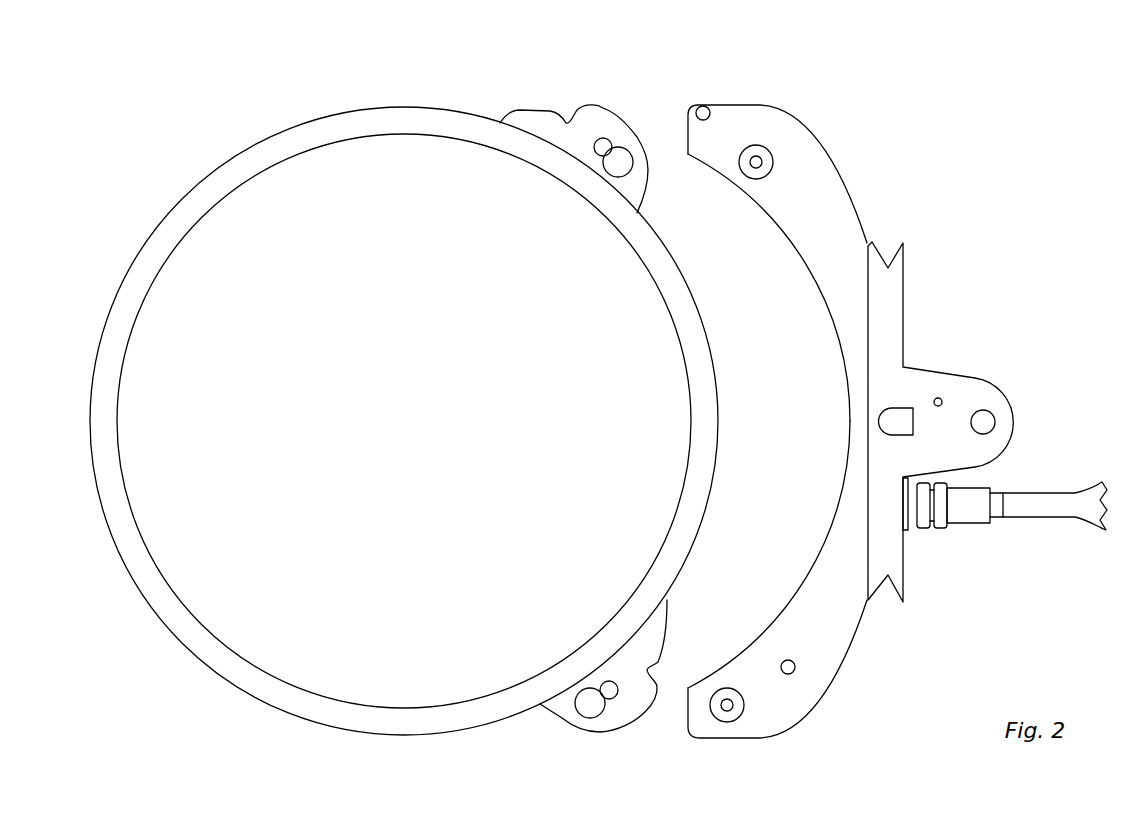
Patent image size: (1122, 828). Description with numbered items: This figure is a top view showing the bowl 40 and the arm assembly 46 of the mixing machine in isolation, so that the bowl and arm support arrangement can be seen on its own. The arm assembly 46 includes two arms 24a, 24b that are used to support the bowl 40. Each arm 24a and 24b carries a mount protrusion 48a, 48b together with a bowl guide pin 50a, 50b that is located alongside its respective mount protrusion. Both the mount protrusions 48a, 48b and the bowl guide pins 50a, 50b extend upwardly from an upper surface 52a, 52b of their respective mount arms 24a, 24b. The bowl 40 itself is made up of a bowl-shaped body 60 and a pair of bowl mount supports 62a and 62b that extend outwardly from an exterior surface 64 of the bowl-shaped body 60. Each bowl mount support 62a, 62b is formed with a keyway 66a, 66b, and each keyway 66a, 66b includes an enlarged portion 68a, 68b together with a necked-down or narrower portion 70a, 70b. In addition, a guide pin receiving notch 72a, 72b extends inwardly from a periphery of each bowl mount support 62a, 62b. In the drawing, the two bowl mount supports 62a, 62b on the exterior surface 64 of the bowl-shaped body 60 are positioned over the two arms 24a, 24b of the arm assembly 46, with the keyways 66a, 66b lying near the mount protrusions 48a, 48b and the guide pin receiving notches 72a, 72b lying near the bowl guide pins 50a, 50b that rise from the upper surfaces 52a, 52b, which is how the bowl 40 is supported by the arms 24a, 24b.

The bowl 40 is at (187, 218).
The exterior surface 64 is at (252, 698).
The bowl-shaped body 60 is at (347, 750).
The bowl mount support 62a is at (540, 712).
The bowl mount support 62b is at (564, 118).
The guide pin receiving notch 72a is at (648, 667).
The guide pin receiving notch 72b is at (592, 106).
The enlarged portion 68a is at (595, 720).
The enlarged portion 68b is at (621, 161).
The necked-down portion 70a is at (618, 694).
The necked-down portion 70b is at (605, 147).
The keyway 66a is at (568, 716).
The keyway 66b is at (638, 176).
The arm 24a is at (804, 605).
The arm 24b is at (814, 228).
The upper surface 52a is at (818, 563).
The upper surface 52b is at (838, 233).
The bowl guide pin 50a is at (796, 668).
The bowl guide pin 50b is at (707, 106).
The mount protrusion 48a is at (728, 720).
The mount protrusion 48b is at (762, 162).
The arm assembly 46 is at (906, 309).